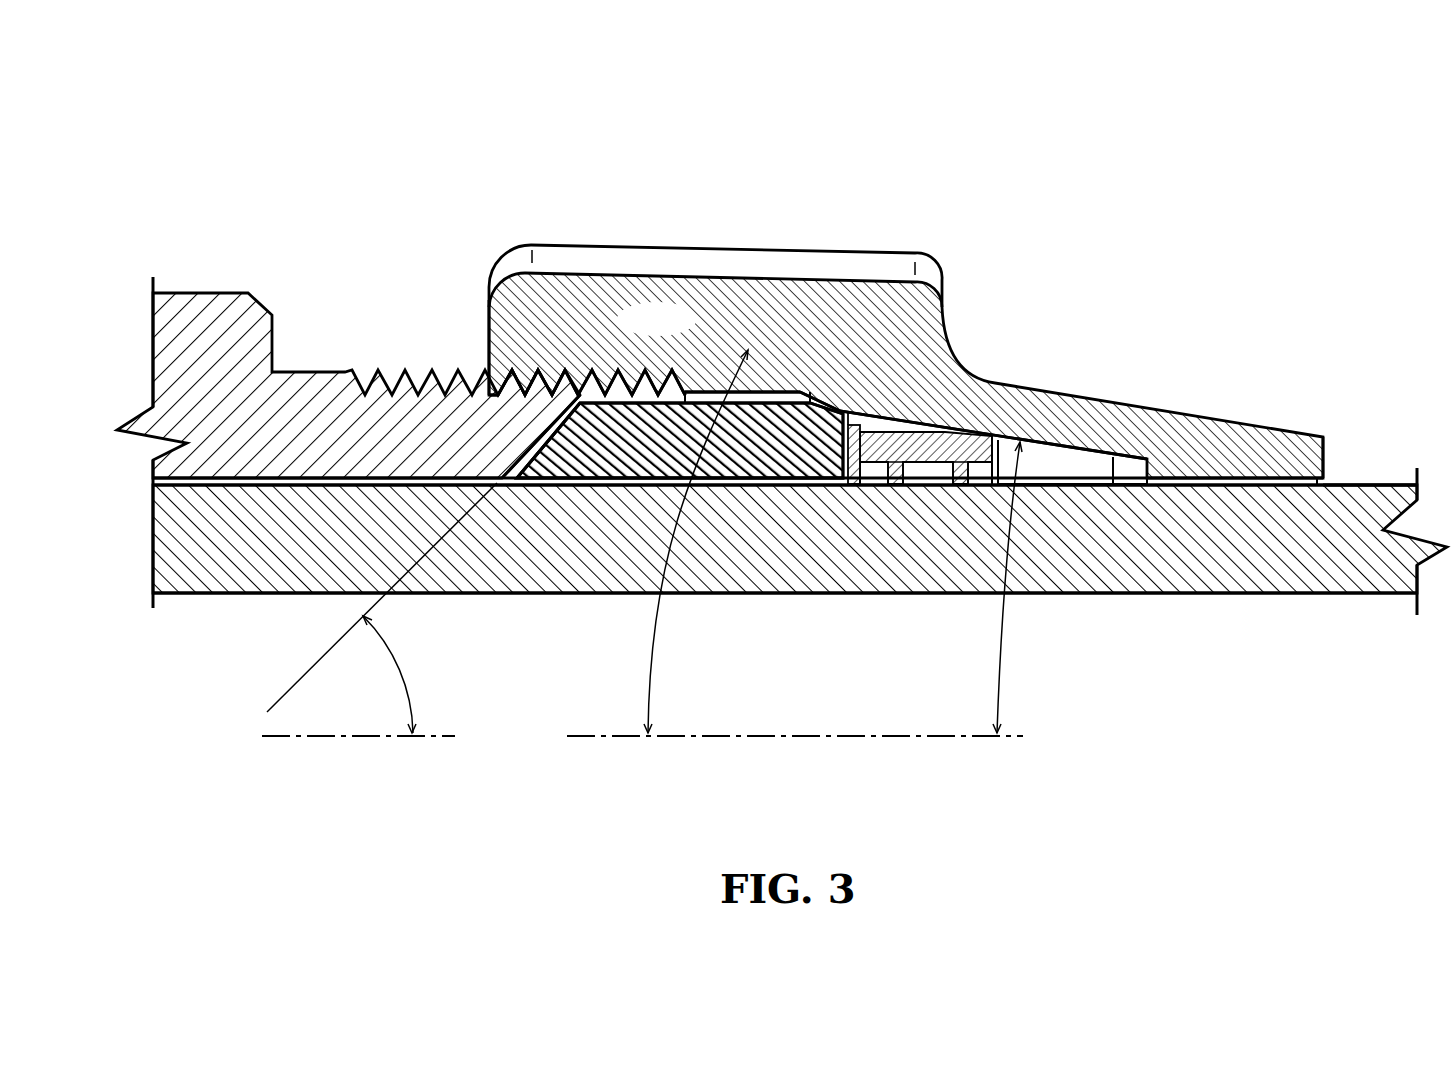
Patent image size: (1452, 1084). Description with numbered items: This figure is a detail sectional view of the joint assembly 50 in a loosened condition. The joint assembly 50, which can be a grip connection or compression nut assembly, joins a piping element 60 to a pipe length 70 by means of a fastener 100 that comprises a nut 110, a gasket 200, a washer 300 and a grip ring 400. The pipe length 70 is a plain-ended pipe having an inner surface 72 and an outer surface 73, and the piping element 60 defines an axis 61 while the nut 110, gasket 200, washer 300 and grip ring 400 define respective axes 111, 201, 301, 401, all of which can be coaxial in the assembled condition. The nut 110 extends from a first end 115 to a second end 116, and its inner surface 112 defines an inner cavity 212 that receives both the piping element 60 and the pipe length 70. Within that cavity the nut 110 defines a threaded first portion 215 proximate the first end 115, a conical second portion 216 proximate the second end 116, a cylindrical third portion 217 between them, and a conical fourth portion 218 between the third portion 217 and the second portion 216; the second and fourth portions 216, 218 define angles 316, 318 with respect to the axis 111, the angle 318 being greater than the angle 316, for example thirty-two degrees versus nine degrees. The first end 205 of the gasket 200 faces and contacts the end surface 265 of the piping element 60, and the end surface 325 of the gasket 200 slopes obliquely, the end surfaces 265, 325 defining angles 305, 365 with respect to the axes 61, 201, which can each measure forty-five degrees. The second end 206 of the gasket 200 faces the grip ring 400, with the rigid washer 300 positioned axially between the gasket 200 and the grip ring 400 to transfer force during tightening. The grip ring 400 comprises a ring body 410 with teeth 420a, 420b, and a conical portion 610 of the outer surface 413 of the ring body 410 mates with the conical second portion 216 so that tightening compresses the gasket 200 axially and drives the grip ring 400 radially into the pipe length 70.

The joint assembly 50 is at (1058, 143).
The piping element 60 is at (197, 293).
The axis 61 is at (379, 651).
The pipe length 70 is at (232, 597).
The inner surface 72 is at (1357, 598).
The outer surface 73 is at (1370, 483).
The fastener 100 is at (636, 260).
The nut 110 is at (906, 375).
The axis 111 is at (774, 588).
The inner surface 112 is at (1073, 467).
The first end 115 is at (487, 312).
The second end 116 is at (1327, 450).
The gasket 200 is at (703, 478).
The axis 201 is at (379, 651).
The first end 205 is at (527, 440).
The second end 206 is at (850, 417).
The inner cavity 212 is at (1045, 462).
The first portion 215 is at (548, 428).
The second portion 216 is at (1113, 467).
The third portion 217 is at (710, 397).
The fourth portion 218 is at (835, 402).
The end surface 265 is at (648, 397).
The washer 300 is at (868, 483).
The axis 301 is at (330, 745).
The angle 305 is at (420, 674).
The angle 316 is at (995, 447).
The angle 318 is at (650, 625).
The end surface 325 is at (549, 421).
The angle 365 is at (393, 658).
The grip ring 400 is at (1061, 452).
The axis 401 is at (590, 745).
The ring body 410 is at (1061, 452).
The outer surface 413 is at (1061, 452).
The tooth 420a is at (960, 478).
The tooth 420b is at (895, 483).
The conical portion 610 is at (950, 431).